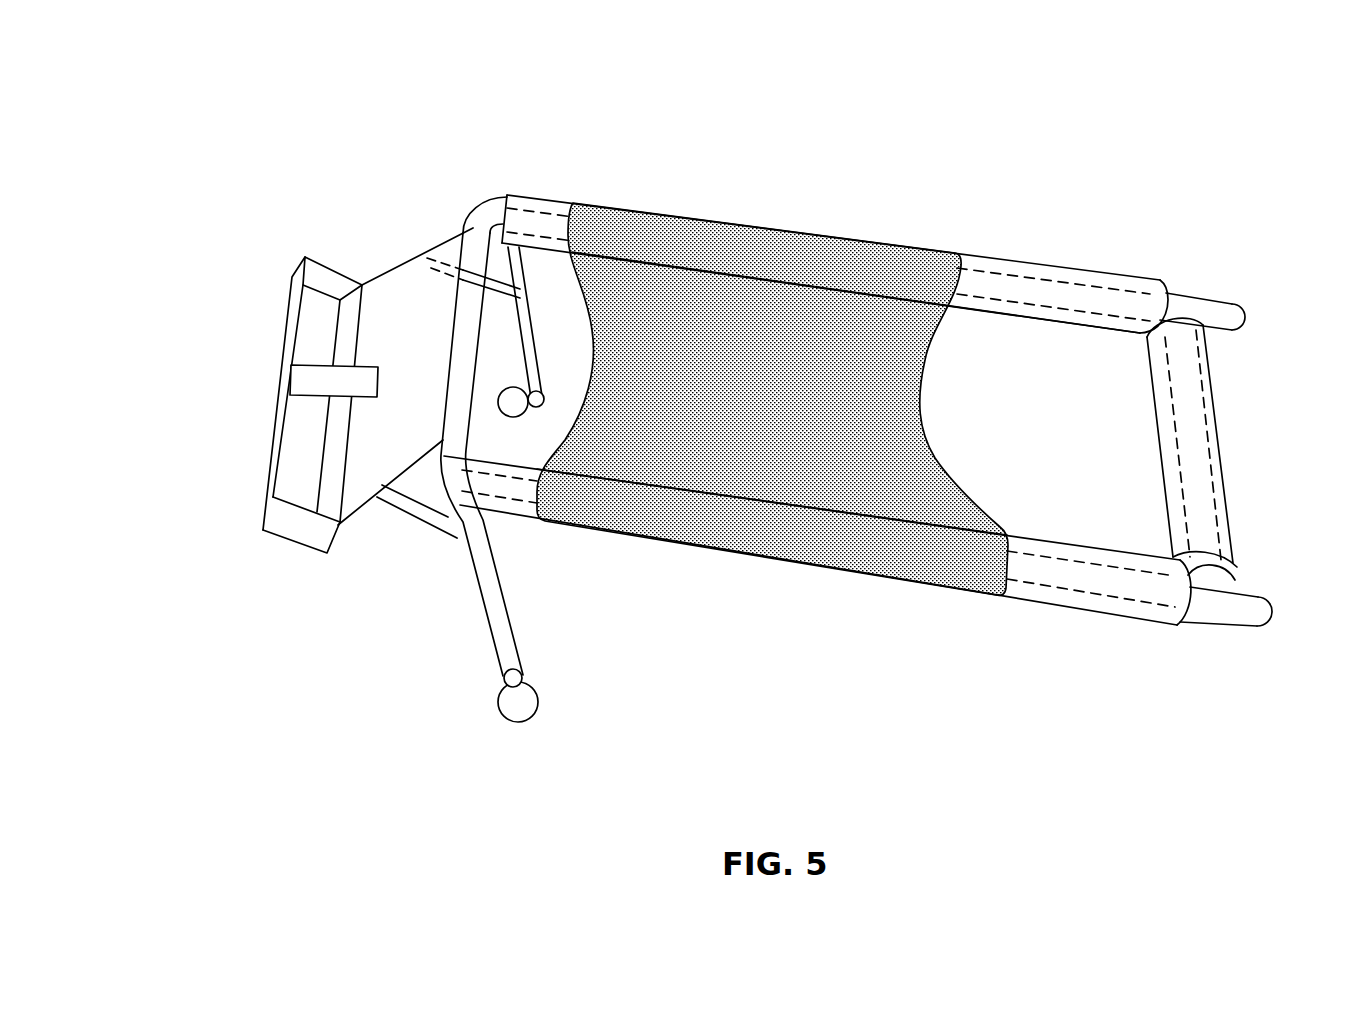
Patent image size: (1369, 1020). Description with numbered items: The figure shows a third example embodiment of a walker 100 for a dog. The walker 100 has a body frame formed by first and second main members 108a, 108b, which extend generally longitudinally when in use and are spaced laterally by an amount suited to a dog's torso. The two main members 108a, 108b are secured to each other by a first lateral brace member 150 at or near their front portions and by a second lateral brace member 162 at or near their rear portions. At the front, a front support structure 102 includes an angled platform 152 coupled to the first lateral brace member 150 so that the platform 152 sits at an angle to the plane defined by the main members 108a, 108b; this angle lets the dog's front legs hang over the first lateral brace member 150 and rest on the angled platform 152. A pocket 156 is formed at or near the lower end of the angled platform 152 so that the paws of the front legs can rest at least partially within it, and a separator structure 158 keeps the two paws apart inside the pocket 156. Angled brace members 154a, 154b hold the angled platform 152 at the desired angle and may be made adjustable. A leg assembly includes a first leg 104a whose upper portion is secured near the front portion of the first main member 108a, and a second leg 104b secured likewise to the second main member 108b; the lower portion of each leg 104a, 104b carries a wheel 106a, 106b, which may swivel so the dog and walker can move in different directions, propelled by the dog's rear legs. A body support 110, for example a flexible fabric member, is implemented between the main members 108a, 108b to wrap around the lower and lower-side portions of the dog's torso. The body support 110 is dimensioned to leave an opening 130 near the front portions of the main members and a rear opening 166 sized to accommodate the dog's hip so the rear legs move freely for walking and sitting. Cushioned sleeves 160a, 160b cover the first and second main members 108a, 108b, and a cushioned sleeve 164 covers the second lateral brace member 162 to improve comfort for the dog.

The walker 100 is at (578, 95).
The front support structure 102 is at (448, 650).
The first leg 104a is at (500, 608).
The second leg 104b is at (530, 293).
The wheel 106a is at (530, 712).
The wheel 106b is at (512, 420).
The first main member 108a is at (1070, 588).
The second main member 108b is at (1032, 277).
The body support 110 is at (795, 440).
The opening 130 is at (568, 376).
The first lateral brace member 150 is at (472, 312).
The angled platform 152 is at (398, 308).
The angled brace member 154a is at (418, 510).
The angled brace member 154b is at (457, 260).
The pocket 156 is at (300, 452).
The separator structure 158 is at (322, 378).
The cushioned sleeve 160a is at (1133, 613).
The cushioned sleeve 160b is at (990, 255).
The second lateral brace member 162 is at (1213, 473).
The cushioned sleeve 164 is at (1237, 533).
The opening 166 is at (1063, 428).